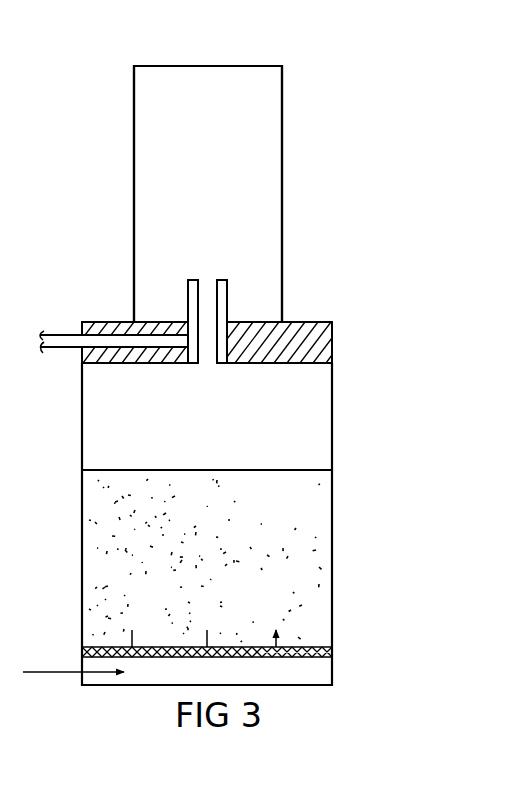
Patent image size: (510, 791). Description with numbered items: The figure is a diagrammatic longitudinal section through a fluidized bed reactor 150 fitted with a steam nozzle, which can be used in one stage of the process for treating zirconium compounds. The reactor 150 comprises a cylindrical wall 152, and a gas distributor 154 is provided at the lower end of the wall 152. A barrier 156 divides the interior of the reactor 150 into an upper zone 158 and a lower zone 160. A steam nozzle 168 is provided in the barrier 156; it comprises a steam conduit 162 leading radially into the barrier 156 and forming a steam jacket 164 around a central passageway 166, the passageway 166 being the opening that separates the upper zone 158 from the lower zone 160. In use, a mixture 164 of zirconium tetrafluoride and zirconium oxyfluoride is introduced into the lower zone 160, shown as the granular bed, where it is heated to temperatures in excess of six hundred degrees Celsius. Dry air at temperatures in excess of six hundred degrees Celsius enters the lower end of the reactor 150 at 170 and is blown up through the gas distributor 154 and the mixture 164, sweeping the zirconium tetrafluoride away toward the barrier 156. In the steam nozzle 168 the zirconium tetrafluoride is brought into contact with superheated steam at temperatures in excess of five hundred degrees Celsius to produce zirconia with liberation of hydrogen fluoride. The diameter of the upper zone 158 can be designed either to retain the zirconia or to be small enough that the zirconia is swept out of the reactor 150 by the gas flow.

The fluidized bed reactor 150 is at (240, 60).
The cylindrical wall 152 is at (334, 425).
The gas distributor 154 is at (318, 652).
The barrier 156 is at (311, 340).
The upper zone 158 is at (240, 239).
The lower zone 160 is at (299, 573).
The steam conduit 162 is at (58, 348).
The steam jacket 164 is at (223, 297).
The central passageway 166 is at (216, 341).
The steam nozzle 168 is at (175, 284).
The air inlet 170 is at (45, 672).